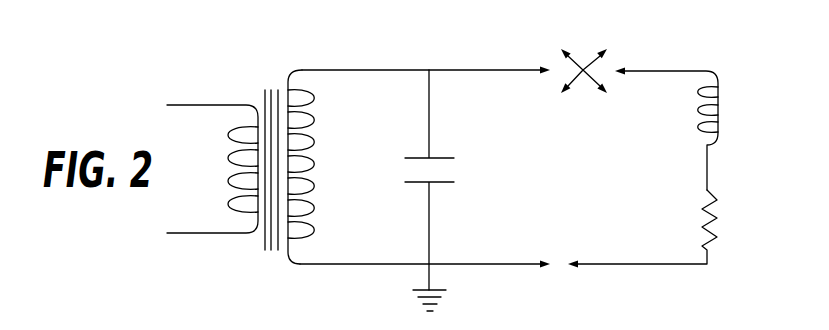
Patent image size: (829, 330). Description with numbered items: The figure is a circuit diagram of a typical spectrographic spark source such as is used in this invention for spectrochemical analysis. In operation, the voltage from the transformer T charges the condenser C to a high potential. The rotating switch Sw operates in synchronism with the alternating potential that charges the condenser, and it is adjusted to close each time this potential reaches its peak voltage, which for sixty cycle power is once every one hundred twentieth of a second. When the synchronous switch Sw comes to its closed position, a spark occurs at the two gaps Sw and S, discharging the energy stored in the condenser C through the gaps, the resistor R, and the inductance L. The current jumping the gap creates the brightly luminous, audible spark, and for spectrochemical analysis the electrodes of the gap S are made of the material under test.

The transformer T is at (240, 161).
The condenser C is at (441, 180).
The gap S is at (559, 279).
The rotating switch Sw is at (583, 59).
The inductance L is at (676, 129).
The resistor R is at (659, 227).